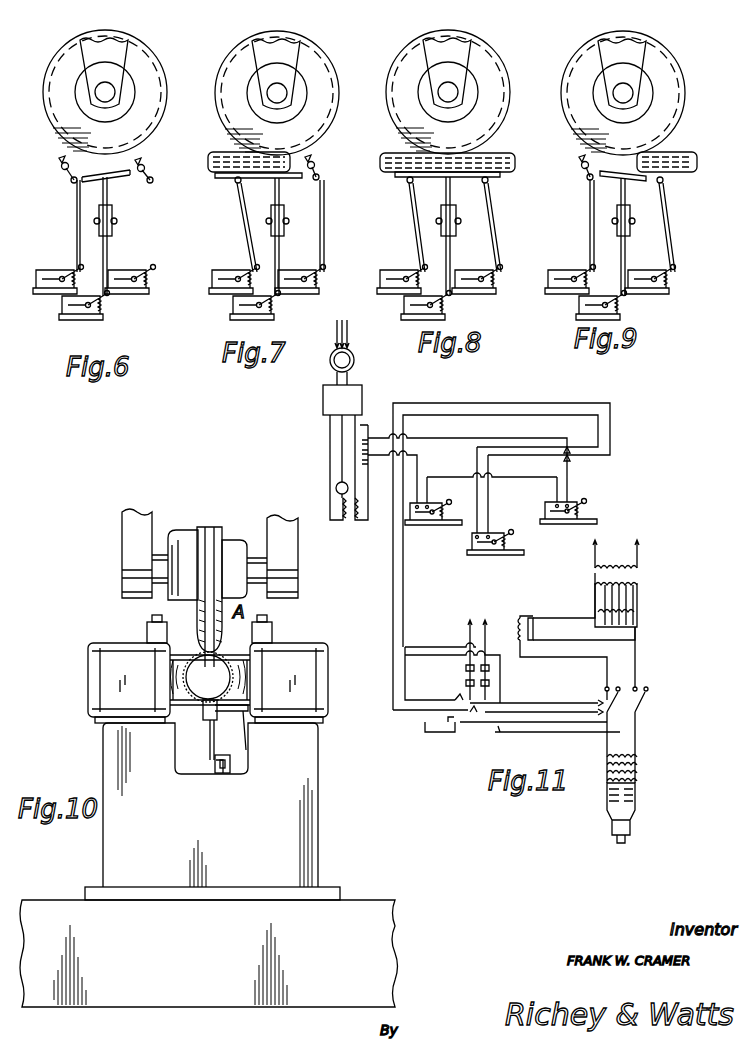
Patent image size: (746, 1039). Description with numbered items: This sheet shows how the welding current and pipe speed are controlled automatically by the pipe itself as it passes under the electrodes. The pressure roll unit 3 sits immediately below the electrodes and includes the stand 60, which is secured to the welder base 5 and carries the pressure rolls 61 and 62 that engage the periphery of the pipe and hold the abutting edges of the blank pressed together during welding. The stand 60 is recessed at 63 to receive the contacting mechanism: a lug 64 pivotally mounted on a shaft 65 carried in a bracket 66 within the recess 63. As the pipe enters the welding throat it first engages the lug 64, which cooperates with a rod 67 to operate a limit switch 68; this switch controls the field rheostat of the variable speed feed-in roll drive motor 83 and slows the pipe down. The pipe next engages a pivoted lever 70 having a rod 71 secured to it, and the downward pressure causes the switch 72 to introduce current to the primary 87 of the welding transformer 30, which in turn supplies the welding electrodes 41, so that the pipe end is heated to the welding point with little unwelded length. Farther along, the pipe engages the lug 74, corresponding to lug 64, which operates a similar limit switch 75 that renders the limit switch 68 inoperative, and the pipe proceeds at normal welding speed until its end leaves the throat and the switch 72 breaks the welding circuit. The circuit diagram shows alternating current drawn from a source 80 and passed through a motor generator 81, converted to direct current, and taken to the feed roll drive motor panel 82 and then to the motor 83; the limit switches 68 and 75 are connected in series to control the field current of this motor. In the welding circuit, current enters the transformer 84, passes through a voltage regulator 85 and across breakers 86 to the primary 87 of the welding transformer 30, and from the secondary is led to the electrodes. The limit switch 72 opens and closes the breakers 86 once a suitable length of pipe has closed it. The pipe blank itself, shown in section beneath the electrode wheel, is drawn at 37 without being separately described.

In FIG. 10, the pressure roll unit 3 is at (260, 870).
In FIG. 10, the welder base 5 is at (355, 910).
In FIG. 11, the welding transformer 30 is at (637, 786).
In FIG. 6, the feed wedge 37 is at (130, 57).
In FIG. 7, the feed wedge 37 is at (305, 66).
In FIG. 8, the feed wedge 37 is at (476, 60).
In FIG. 9, the feed wedge 37 is at (651, 66).
In FIG. 6, the welding electrode 41 is at (112, 88).
In FIG. 7, the welding electrode 41 is at (288, 93).
In FIG. 8, the welding electrode 41 is at (464, 92).
In FIG. 9, the welding electrode 41 is at (639, 93).
In FIG. 10, the stand 60 is at (297, 810).
In FIG. 10, the pressure roll 61 is at (250, 660).
In FIG. 10, the pressure roll 62 is at (172, 660).
In FIG. 10, the recess 63 is at (240, 763).
In FIG. 6, the lug 64 is at (67, 176).
In FIG. 6, the shaft 65 is at (152, 188).
In FIG. 10, the shaft 65 is at (206, 714).
In FIG. 10, the bracket 66 is at (245, 733).
In FIG. 6, the rod 67 is at (76, 222).
In FIG. 6, the limit switch 68 is at (52, 292).
In FIG. 11, the limit switch 68 is at (428, 527).
In FIG. 6, the pivoted lever 70 is at (108, 177).
In FIG. 6, the rod 71 is at (108, 247).
In FIG. 6, the switch 72 is at (100, 319).
In FIG. 11, the switch 72 is at (488, 557).
In FIG. 6, the lug 74 is at (146, 172).
In FIG. 6, the limit switch 75 is at (135, 293).
In FIG. 10, the limit switch 75 is at (218, 775).
In FIG. 11, the limit switch 75 is at (565, 526).
In FIG. 11, the alternating current source 80 is at (352, 332).
In FIG. 11, the motor generator 81 is at (355, 361).
In FIG. 11, the feed roll drive motor panel 82 is at (362, 397).
In FIG. 11, the feed-in roll drive motor 83 is at (336, 498).
In FIG. 11, the transformer 84 is at (640, 576).
In FIG. 11, the voltage regulator 85 is at (536, 622).
In FIG. 11, the breakers 86 is at (642, 703).
In FIG. 11, the primary 87 is at (637, 762).